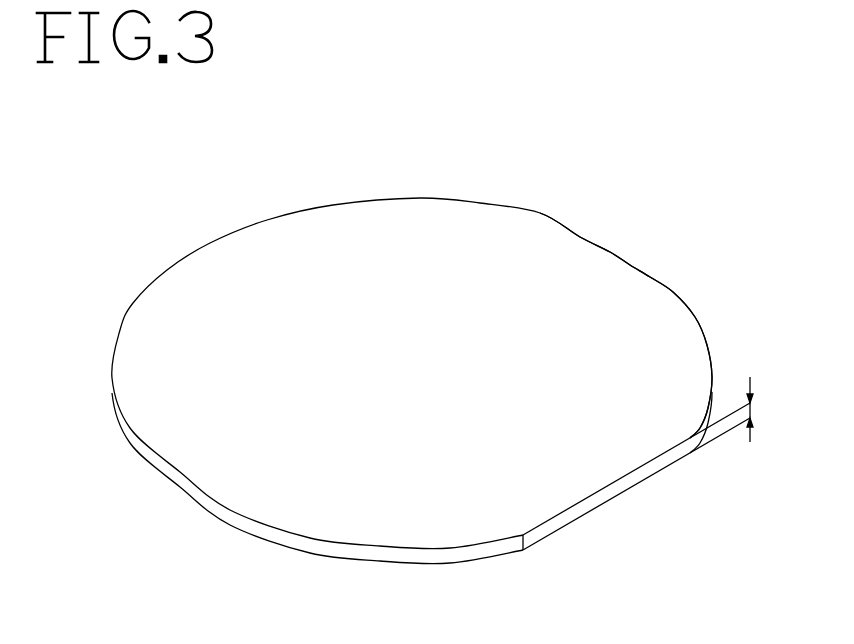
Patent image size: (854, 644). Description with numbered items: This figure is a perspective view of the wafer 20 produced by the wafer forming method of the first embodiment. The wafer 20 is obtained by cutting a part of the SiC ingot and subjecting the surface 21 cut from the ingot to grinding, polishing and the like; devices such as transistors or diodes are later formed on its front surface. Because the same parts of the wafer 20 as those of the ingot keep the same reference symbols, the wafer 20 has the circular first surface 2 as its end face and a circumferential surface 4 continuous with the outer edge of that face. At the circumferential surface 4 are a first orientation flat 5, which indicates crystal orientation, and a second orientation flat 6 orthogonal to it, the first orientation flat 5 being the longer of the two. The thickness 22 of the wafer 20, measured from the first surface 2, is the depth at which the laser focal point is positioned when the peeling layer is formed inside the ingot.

The wafer 20 is at (328, 153).
The first surface 2 is at (638, 292).
The second orientation flat 6 is at (610, 250).
The circumferential surface 4 is at (406, 562).
The first orientation flat 5 is at (612, 499).
The surface 21 is at (667, 468).
The thickness 22 is at (757, 408).